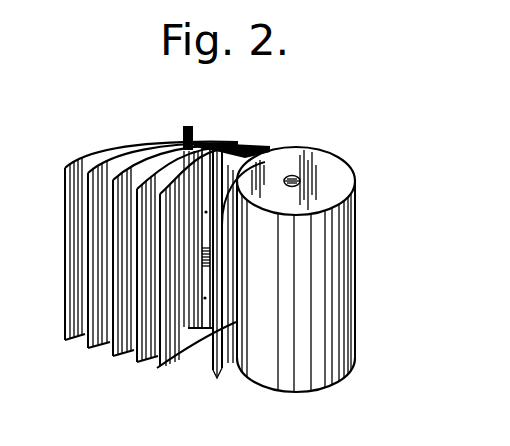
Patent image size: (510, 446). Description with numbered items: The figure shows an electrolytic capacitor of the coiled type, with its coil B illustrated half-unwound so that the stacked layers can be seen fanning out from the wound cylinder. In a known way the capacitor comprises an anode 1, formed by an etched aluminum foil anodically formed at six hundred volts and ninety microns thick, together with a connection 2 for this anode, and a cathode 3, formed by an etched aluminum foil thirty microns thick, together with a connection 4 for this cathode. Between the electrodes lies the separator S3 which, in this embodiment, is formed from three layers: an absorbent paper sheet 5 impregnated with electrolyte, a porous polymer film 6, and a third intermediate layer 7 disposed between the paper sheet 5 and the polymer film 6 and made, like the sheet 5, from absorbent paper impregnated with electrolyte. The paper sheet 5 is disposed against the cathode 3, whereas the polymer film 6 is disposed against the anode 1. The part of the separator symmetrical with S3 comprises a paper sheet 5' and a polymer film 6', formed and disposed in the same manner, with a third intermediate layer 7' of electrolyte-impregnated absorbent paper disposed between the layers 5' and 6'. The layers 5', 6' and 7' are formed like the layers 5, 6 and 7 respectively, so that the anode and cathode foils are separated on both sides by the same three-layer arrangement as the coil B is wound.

The anode 1 is at (190, 343).
The connection 2 is at (222, 145).
The cathode 3 is at (173, 155).
The connection 4 is at (193, 138).
The absorbent paper sheet 5 is at (136, 250).
The paper sheet 5' is at (136, 245).
The polymer film 6 is at (105, 270).
The polymer film 6' is at (230, 281).
The intermediate layer 7 is at (135, 254).
The intermediate layer 7' is at (145, 219).
The separator S3 is at (157, 368).
The coil B is at (355, 268).